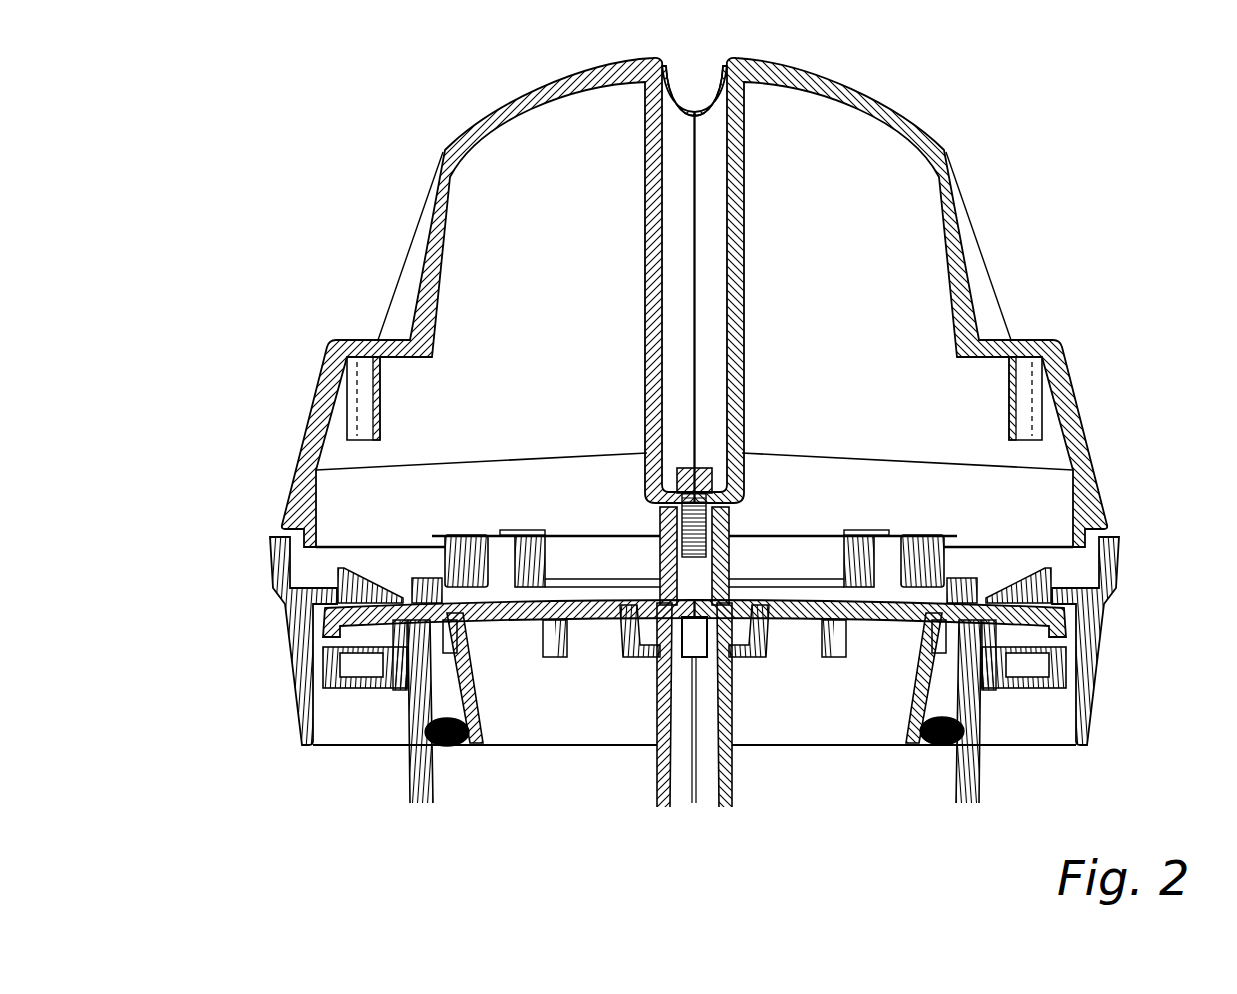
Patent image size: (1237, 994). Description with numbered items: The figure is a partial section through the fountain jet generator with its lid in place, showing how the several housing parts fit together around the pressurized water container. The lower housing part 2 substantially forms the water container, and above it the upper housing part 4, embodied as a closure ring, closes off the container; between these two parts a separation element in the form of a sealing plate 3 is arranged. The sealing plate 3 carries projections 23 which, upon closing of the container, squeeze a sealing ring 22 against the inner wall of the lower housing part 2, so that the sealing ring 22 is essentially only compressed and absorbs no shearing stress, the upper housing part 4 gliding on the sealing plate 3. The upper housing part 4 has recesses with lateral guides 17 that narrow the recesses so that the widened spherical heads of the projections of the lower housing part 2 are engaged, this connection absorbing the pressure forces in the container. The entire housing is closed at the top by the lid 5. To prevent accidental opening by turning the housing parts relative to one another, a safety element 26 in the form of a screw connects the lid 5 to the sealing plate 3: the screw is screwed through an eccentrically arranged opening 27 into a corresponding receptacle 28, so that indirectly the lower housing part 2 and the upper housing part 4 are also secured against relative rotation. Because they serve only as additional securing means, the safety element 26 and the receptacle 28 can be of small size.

The lower housing part 2 is at (423, 797).
The sealing plate 3 is at (318, 618).
The upper housing part 4 is at (293, 687).
The lid 5 is at (310, 420).
The lateral guides 17 is at (1007, 577).
The sealing ring 22 is at (923, 737).
The projections of the sealing plate 23 is at (908, 693).
The safety element 26 is at (706, 473).
The eccentrically arranged opening 27 is at (713, 421).
The receptacle 28 is at (717, 565).